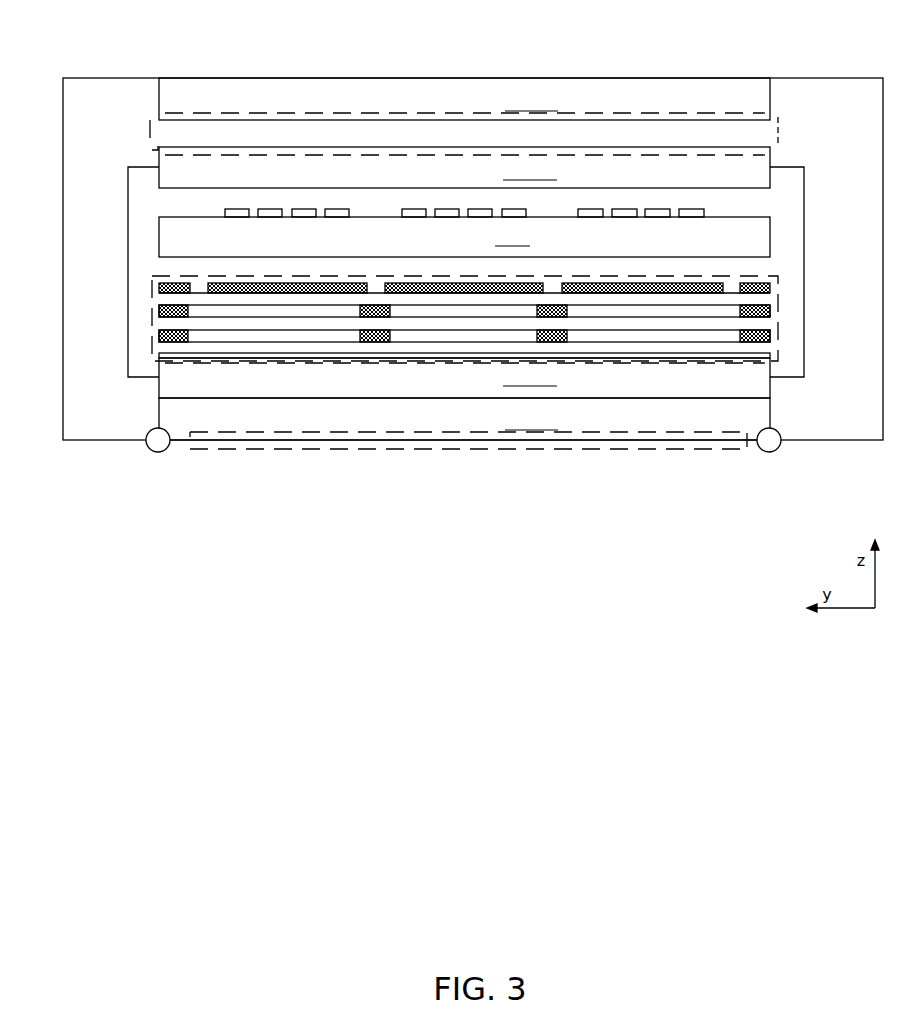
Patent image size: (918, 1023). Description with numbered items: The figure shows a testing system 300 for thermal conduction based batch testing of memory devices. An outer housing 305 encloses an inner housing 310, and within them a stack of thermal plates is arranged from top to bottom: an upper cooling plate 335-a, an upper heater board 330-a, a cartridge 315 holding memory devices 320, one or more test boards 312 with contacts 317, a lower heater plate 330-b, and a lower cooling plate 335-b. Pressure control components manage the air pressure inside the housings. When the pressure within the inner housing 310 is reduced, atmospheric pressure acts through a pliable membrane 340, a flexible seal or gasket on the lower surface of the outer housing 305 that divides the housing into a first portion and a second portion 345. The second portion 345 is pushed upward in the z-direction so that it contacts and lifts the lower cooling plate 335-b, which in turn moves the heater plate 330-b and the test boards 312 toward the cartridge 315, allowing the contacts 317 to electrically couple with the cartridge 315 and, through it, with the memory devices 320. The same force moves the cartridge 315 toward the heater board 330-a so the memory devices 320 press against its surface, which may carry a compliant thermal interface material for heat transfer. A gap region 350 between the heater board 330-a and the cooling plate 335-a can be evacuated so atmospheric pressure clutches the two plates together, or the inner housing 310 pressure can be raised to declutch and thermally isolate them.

The testing system 300 is at (718, 907).
The outer housing 305 is at (631, 78).
The inner housing 310 is at (793, 166).
The test boards 312 is at (153, 326).
The cartridge 315 is at (464, 237).
The contacts 317 is at (153, 292).
The memory devices 320 is at (227, 212).
The heater board 330-a is at (464, 167).
The heater plate 330-b is at (464, 378).
The cooling plate 335-a is at (464, 99).
The cooling plate 335-b is at (464, 419).
The pliable membrane 340 is at (157, 452).
The second portion 345 is at (438, 450).
The gap region 350 is at (150, 130).